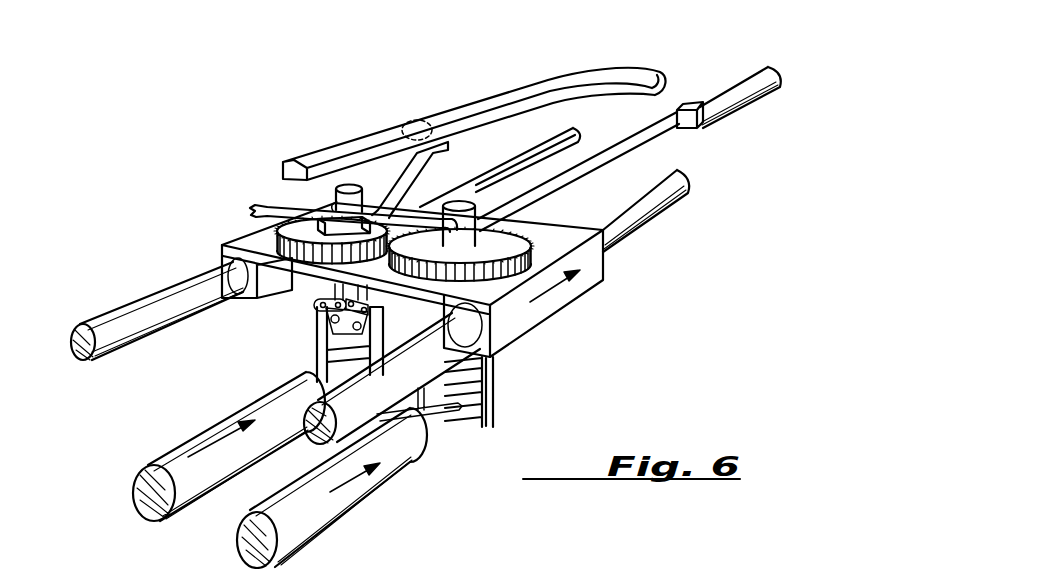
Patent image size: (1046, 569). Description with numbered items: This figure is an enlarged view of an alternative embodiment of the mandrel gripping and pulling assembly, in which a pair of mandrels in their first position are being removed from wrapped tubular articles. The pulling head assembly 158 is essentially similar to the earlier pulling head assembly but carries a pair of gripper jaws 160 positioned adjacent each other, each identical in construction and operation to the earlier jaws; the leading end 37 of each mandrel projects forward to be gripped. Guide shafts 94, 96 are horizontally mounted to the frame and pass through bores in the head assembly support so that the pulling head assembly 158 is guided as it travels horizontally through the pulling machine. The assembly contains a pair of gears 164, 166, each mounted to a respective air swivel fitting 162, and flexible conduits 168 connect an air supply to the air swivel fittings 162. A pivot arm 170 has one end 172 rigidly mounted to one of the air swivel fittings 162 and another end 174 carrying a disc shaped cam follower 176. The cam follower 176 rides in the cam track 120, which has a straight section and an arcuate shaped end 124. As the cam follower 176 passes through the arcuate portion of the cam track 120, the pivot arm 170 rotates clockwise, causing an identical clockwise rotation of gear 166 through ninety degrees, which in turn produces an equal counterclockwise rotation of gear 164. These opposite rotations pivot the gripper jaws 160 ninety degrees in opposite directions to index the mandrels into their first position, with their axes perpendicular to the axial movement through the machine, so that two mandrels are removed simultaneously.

The leading end 37 is at (238, 512).
The guide shaft 94 is at (633, 229).
The guide shaft 96 is at (115, 318).
The cam track 120 is at (540, 75).
The arcuate shaped end 124 is at (613, 75).
The pulling head assembly 158 is at (560, 310).
The gripper jaws 160 is at (496, 398).
The air swivel fittings 162 is at (348, 186).
The gear 164 is at (507, 247).
The gear 166 is at (296, 232).
The flexible conduits 168 is at (268, 210).
The pivot arm 170 is at (398, 180).
The end of pivot arm 172 is at (334, 225).
The end of pivot arm 174 is at (440, 196).
The cam follower 176 is at (421, 119).